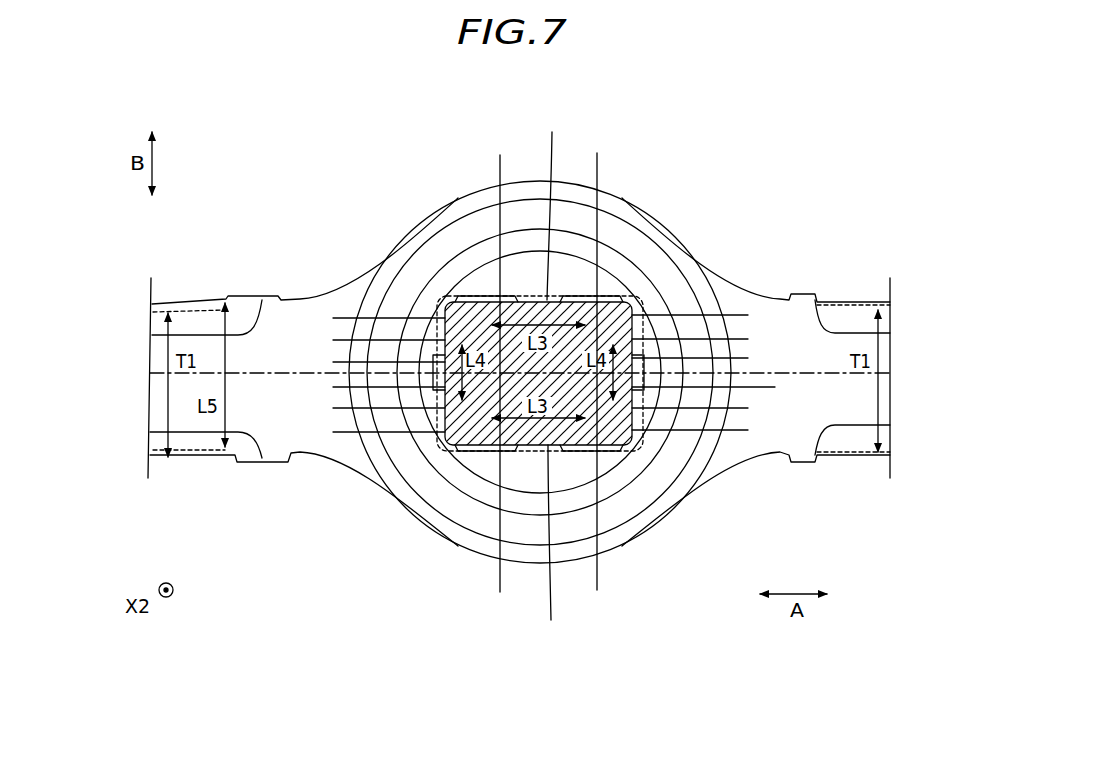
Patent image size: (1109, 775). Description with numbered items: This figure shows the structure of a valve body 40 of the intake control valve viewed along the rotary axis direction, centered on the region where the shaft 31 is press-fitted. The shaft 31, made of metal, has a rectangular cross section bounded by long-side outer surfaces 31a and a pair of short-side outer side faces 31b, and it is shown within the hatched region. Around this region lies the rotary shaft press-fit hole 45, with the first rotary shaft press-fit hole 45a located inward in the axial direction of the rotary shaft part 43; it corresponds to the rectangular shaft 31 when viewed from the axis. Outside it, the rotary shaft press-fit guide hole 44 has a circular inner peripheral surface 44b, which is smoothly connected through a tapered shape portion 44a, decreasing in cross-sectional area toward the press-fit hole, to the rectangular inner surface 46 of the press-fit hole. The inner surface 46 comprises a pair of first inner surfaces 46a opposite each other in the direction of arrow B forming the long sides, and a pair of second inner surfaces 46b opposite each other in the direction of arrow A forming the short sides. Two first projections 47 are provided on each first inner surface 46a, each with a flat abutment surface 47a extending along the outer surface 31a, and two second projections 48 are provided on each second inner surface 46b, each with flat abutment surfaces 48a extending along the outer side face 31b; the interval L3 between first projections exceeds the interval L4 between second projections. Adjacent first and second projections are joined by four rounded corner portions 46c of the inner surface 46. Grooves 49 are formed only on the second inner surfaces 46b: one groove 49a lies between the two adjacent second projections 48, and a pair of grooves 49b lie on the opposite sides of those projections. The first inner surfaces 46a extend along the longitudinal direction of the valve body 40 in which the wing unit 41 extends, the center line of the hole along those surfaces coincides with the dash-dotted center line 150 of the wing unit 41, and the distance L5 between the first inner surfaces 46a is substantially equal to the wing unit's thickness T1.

The valve body 40 is at (843, 137).
The wing unit 41 is at (185, 303).
The rotary shaft part 43 is at (623, 205).
The rotary shaft press-fit guide hole 44 is at (391, 285).
The tapered shape portion 44a is at (360, 285).
The inner peripheral surface 44b is at (433, 252).
The rotary shaft press-fit hole 45 is at (535, 277).
The first rotary shaft press-fit hole 45a is at (458, 257).
The inner surface 46 is at (540, 374).
The first inner surface 46a is at (549, 376).
The second inner surface 46b is at (540, 387).
The corner portion 46c is at (382, 268).
The first projection 47 is at (556, 374).
The abutment surface 47a is at (556, 374).
The second projection 48 is at (540, 374).
The abutment surface 48a is at (540, 374).
The groove 49 is at (540, 374).
The groove 49a is at (540, 360).
The groove 49b is at (540, 374).
The shaft 31 is at (616, 297).
The outer surface 31a is at (665, 300).
The outer side face 31b is at (395, 450).
The center line 150 is at (836, 294).